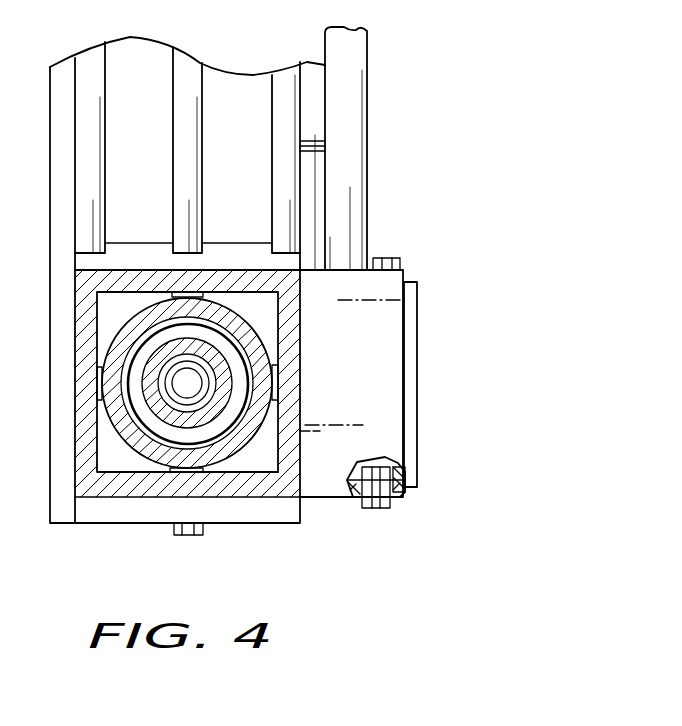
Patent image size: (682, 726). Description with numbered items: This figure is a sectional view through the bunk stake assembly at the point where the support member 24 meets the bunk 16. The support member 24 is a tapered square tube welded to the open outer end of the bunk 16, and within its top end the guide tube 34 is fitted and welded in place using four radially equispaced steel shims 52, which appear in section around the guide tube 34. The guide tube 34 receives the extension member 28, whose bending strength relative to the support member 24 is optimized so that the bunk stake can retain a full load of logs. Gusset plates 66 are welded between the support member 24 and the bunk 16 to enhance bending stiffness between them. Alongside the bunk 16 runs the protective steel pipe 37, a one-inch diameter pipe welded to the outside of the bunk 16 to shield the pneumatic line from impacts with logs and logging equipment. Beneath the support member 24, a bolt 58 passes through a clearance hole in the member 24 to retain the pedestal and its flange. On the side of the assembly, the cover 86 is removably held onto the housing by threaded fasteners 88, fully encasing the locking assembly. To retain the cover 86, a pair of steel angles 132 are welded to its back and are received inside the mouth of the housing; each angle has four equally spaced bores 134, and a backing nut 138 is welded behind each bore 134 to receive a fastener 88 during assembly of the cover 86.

The bunk 16 is at (326, 113).
The support member 24 is at (250, 258).
The extension member 28 is at (230, 425).
The guide tube 34 is at (118, 418).
The protective steel pipe 37 is at (343, 152).
The steel shims 52 is at (176, 292).
The bolt 58 is at (188, 537).
The gusset plates 66 is at (128, 100).
The cover 86 is at (418, 368).
The threaded fasteners 88 is at (388, 257).
The steel angles 132 is at (405, 475).
The bores 134 is at (398, 495).
The backing nut 138 is at (376, 470).